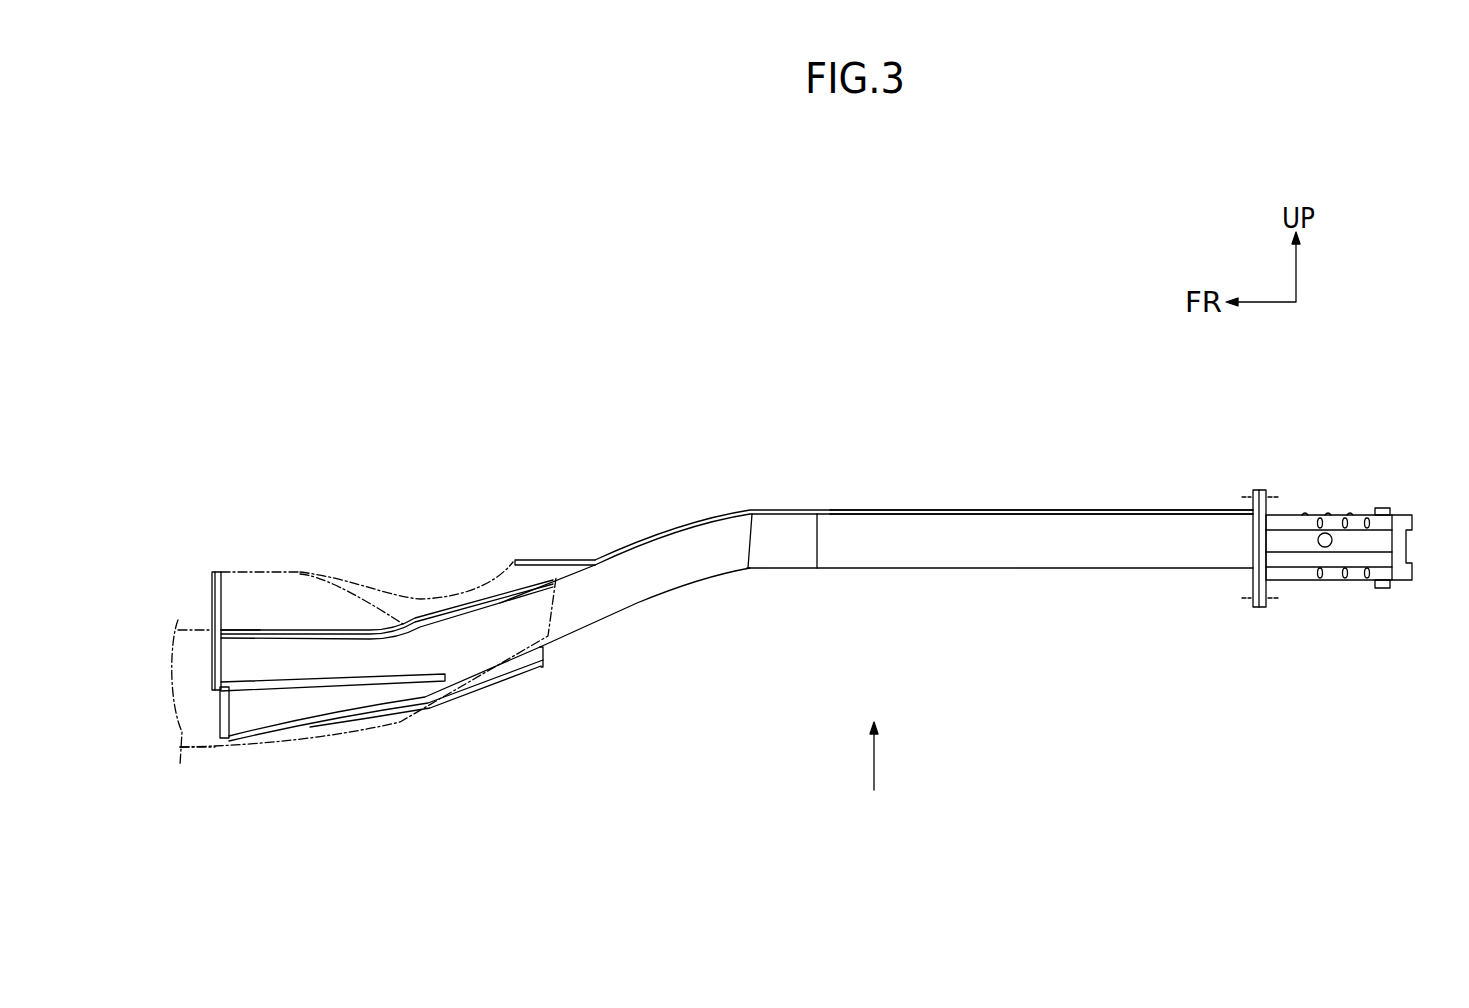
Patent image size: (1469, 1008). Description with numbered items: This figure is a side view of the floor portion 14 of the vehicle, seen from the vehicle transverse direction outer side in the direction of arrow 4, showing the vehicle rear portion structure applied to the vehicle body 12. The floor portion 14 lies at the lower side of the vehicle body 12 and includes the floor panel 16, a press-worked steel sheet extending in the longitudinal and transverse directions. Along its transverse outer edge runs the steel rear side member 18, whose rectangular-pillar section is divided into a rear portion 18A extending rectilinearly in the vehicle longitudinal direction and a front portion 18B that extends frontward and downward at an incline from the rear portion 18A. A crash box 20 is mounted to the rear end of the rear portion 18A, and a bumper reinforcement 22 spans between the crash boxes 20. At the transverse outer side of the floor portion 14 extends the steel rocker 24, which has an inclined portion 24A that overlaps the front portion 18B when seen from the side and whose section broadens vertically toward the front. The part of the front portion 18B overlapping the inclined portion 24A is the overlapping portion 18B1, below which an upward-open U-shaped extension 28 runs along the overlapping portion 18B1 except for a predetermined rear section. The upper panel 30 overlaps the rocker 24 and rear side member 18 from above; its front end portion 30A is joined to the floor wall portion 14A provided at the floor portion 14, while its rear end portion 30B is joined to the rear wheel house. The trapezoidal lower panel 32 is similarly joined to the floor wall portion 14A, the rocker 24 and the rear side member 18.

The arrow 4 is at (874, 758).
The vehicle body 12 is at (917, 306).
The floor portion 14 is at (635, 495).
The floor wall portion 14A is at (212, 643).
The floor panel 16 is at (303, 575).
The rear side member 18 is at (930, 575).
The rear portion 18A is at (1065, 545).
The front portion 18B is at (622, 607).
The overlapping portion 18B1 is at (467, 642).
The crash box 20 is at (1283, 577).
The bumper reinforcement 22 is at (1388, 533).
The rocker 24 is at (200, 745).
The inclined portion 24A is at (293, 740).
The extension 28 is at (332, 705).
The upper panel 30 is at (282, 633).
The end portion 30A is at (225, 628).
The end portion 30B is at (552, 582).
The lower panel 32 is at (388, 713).